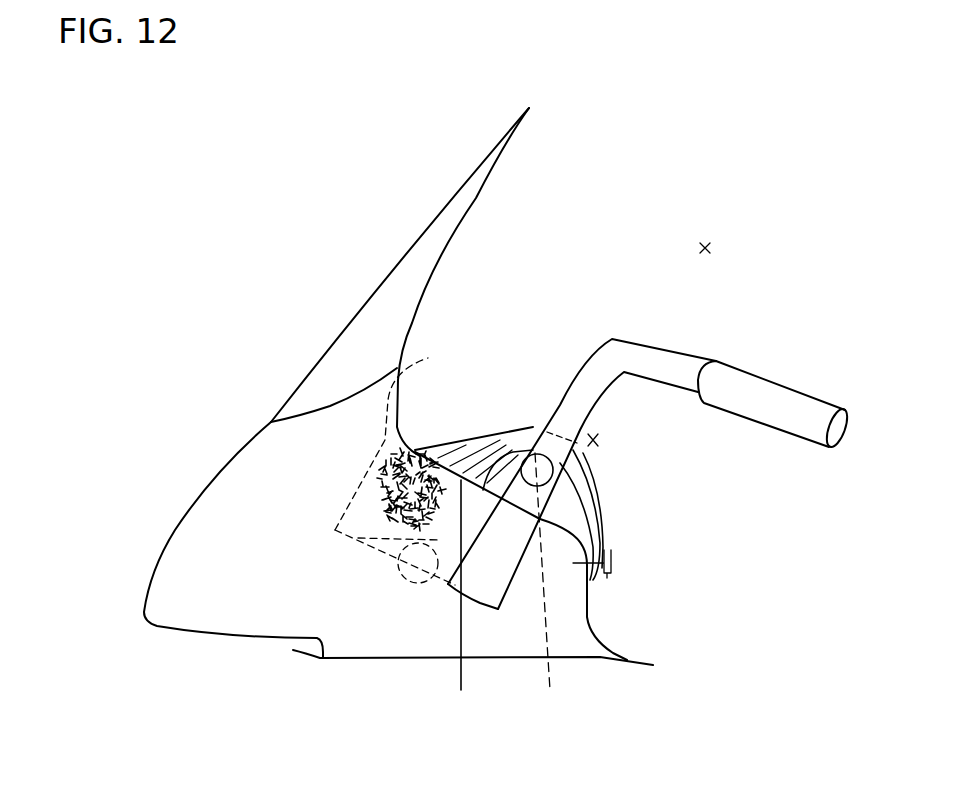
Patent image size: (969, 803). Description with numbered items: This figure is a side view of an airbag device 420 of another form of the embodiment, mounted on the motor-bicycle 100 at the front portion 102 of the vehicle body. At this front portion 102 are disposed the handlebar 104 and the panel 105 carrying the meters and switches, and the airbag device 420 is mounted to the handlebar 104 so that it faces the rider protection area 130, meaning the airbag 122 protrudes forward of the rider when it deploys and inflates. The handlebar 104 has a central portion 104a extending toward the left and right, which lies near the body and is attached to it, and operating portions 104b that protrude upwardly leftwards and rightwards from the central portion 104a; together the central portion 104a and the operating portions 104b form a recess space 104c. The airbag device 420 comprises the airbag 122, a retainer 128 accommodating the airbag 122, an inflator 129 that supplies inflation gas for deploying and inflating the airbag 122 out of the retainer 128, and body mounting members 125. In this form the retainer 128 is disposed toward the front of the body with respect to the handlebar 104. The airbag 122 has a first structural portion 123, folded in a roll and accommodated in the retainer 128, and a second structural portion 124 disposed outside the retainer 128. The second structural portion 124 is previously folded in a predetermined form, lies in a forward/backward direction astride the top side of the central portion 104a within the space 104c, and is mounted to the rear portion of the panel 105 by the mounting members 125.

The motor-bicycle 100 is at (280, 325).
The front portion 102 is at (273, 643).
The handlebar 104 is at (672, 350).
The central portion 104a is at (555, 597).
The operating portions 104b is at (748, 402).
The recess space 104c is at (598, 438).
The panel 105 is at (461, 610).
The airbag 122 is at (572, 330).
The first structural portion 123 is at (424, 355).
The second structural portion 124 is at (535, 429).
The body mounting members 125 is at (611, 573).
The retainer 128 is at (397, 567).
The inflator 129 is at (410, 563).
The rider protection area 130 is at (705, 245).
The airbag device 420 is at (630, 526).